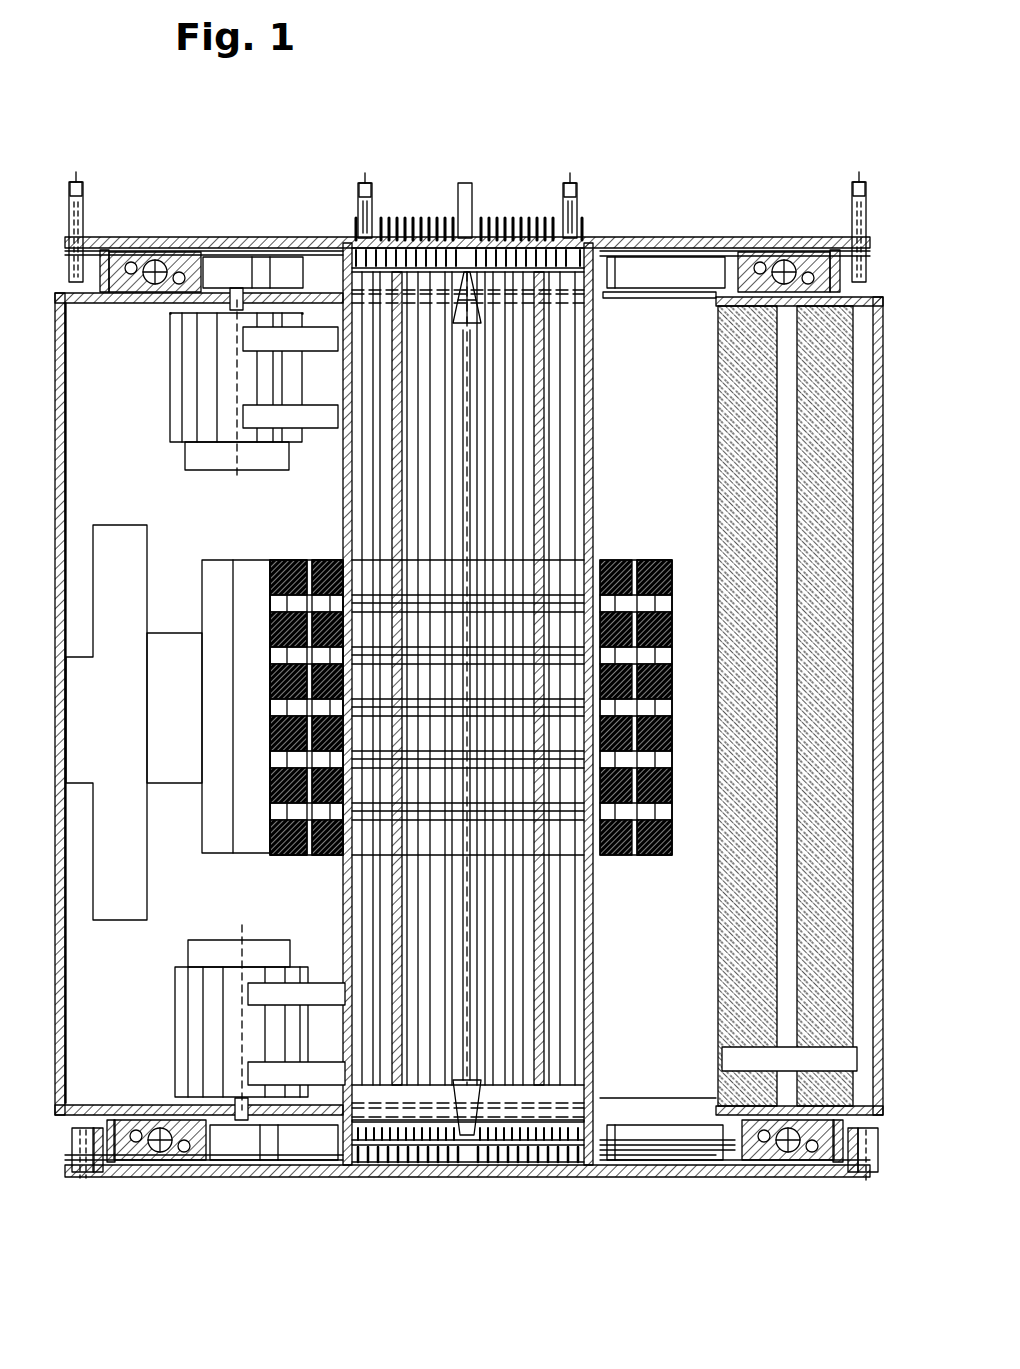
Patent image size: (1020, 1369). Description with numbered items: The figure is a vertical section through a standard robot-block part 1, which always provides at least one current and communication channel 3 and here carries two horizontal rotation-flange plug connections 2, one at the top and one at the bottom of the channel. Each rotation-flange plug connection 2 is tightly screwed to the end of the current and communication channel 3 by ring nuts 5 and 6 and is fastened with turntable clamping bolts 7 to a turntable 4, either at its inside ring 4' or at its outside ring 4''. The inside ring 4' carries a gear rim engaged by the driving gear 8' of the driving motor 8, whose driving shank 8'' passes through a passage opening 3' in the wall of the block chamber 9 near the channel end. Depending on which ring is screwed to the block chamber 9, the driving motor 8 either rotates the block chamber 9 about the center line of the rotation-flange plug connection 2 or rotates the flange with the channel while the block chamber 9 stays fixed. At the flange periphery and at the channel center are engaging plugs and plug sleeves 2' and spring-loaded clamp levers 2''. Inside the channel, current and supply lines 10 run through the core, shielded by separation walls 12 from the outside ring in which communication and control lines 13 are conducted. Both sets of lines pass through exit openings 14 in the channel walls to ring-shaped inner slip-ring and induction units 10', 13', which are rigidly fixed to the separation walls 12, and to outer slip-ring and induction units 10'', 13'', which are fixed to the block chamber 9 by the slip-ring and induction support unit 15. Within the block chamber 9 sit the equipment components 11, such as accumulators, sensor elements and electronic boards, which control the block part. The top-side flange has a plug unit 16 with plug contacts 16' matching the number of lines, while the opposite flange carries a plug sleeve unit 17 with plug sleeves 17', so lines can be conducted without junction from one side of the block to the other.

The standard robot-block part 1 is at (620, 185).
The rotation-flange plug connection 2 is at (467, 699).
The engaging plugs and plug sleeves 2' is at (275, 669).
The spring-loaded clamp levers 2'' is at (711, 677).
The current and communication channel 3 is at (496, 704).
The passage opening 3' is at (473, 655).
The turntable 4 is at (667, 1189).
The inside ring 4' is at (683, 1191).
The outside ring 4'' is at (720, 1189).
The ring nut 5 is at (605, 245).
The ring nut 6 is at (300, 285).
The turntable clamping bolts 7 is at (795, 237).
The driving motor 8 is at (229, 705).
The driving gear 8' is at (256, 242).
The driving shank 8'' is at (185, 336).
The block chamber 9 is at (80, 1045).
The current and supply lines 10 is at (471, 739).
The inner slip-ring and induction unit 10' is at (488, 702).
The outer slip-ring and induction unit 10'' is at (472, 671).
The equipment components 11 is at (715, 1080).
The separation walls 12 is at (490, 998).
The communication and control lines 13 is at (469, 678).
The inner slip-ring and induction unit for control lines 13' is at (316, 731).
The outer slip-ring and induction unit for control lines 13'' is at (456, 695).
The exit openings 14 is at (540, 565).
The slip-ring and induction support unit 15 is at (150, 570).
The plug unit 16 is at (468, 237).
The plug contacts 16' is at (499, 202).
The plug sleeve unit 17 is at (468, 1161).
The plug sleeves 17' is at (468, 1178).